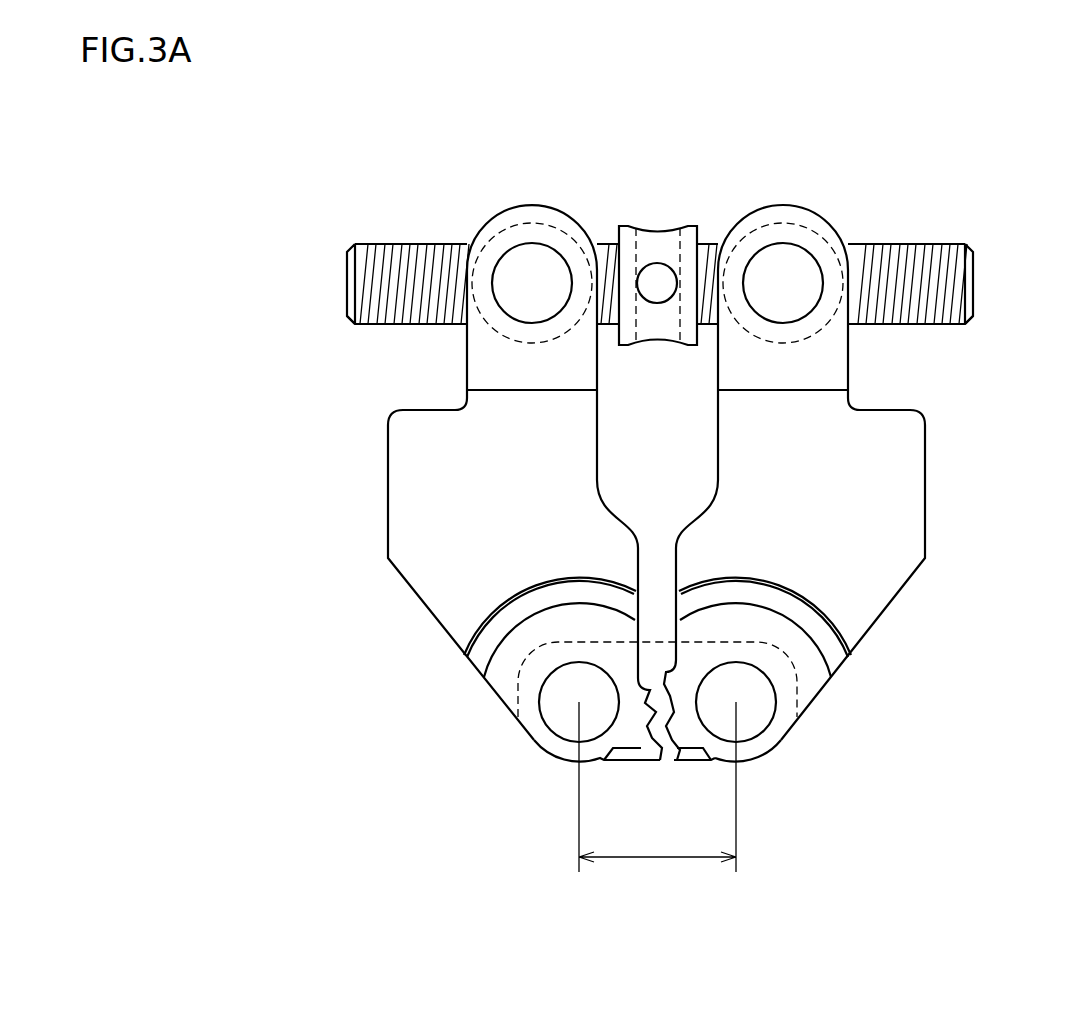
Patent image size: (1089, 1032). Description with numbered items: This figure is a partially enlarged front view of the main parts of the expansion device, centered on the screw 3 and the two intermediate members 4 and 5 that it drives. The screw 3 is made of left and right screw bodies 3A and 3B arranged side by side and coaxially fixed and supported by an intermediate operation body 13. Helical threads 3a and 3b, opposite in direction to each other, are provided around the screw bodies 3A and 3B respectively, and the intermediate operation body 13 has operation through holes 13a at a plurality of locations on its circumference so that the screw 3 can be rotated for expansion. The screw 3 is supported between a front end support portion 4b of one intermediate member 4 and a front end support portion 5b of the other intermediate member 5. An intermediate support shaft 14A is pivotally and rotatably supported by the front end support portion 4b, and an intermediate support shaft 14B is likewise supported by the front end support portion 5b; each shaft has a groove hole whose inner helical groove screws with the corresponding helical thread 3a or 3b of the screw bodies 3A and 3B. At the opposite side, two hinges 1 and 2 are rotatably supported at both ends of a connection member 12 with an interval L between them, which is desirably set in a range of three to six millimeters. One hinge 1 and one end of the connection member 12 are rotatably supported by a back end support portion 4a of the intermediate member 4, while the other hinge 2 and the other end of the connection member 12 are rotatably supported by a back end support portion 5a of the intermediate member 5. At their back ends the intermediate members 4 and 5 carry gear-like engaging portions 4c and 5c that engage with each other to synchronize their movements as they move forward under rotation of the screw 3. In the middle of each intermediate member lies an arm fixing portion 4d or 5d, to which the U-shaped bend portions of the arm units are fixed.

The hinge 1 is at (558, 718).
The hinge 2 is at (755, 715).
The screw 3 is at (664, 233).
The screw body 3A is at (400, 242).
The screw body 3B is at (947, 247).
The helical thread 3a is at (388, 322).
The helical thread 3b is at (940, 325).
The intermediate member 4 is at (458, 476).
The back end support portion 4a is at (515, 700).
The front end support portion 4b is at (520, 200).
The gear-like engaging portion 4c is at (617, 760).
The arm fixing portion 4d is at (415, 513).
The intermediate member 5 is at (880, 479).
The back end support portion 5a is at (807, 710).
The front end support portion 5b is at (822, 204).
The gear-like engaging portion 5c is at (697, 768).
The arm fixing portion 5d is at (890, 527).
The connection member 12 is at (645, 762).
The intermediate operation body 13 is at (663, 206).
The operation through hole 13a is at (657, 273).
The intermediate support shaft 14A is at (553, 227).
The intermediate support shaft 14B is at (777, 227).
The interval L is at (647, 857).